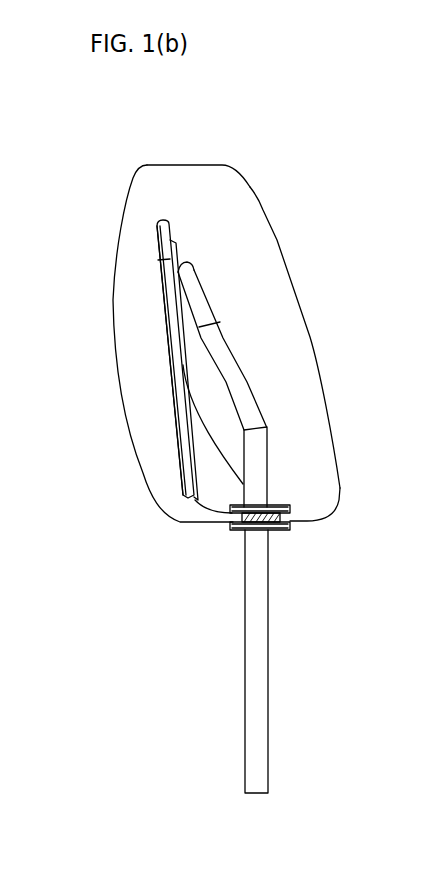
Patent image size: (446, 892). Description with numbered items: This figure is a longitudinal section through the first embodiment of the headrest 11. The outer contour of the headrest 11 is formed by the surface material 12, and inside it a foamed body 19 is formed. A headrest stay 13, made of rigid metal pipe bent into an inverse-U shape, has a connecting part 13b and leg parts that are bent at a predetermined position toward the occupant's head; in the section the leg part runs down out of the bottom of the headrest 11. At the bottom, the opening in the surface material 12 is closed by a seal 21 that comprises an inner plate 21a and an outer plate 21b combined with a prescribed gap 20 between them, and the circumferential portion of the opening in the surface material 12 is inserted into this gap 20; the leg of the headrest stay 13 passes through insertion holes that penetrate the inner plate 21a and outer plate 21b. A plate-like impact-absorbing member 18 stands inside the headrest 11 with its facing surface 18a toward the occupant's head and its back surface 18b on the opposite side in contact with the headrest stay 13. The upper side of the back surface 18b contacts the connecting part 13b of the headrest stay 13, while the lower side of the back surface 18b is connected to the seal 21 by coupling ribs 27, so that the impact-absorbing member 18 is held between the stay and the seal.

The headrest 11 is at (293, 194).
The surface material 12 is at (182, 165).
The headrest stay 13 is at (254, 386).
The connecting part 13b is at (187, 262).
The impact-absorbing member 18 is at (150, 320).
The facing surface 18a is at (167, 380).
The back surface 18b is at (180, 362).
The foamed body 19 is at (260, 268).
The gap 20 is at (283, 518).
The shaft 21 is at (278, 531).
The inner plate 21a is at (280, 508).
The outer plate 21b is at (235, 530).
The coupling ribs 27 is at (198, 512).